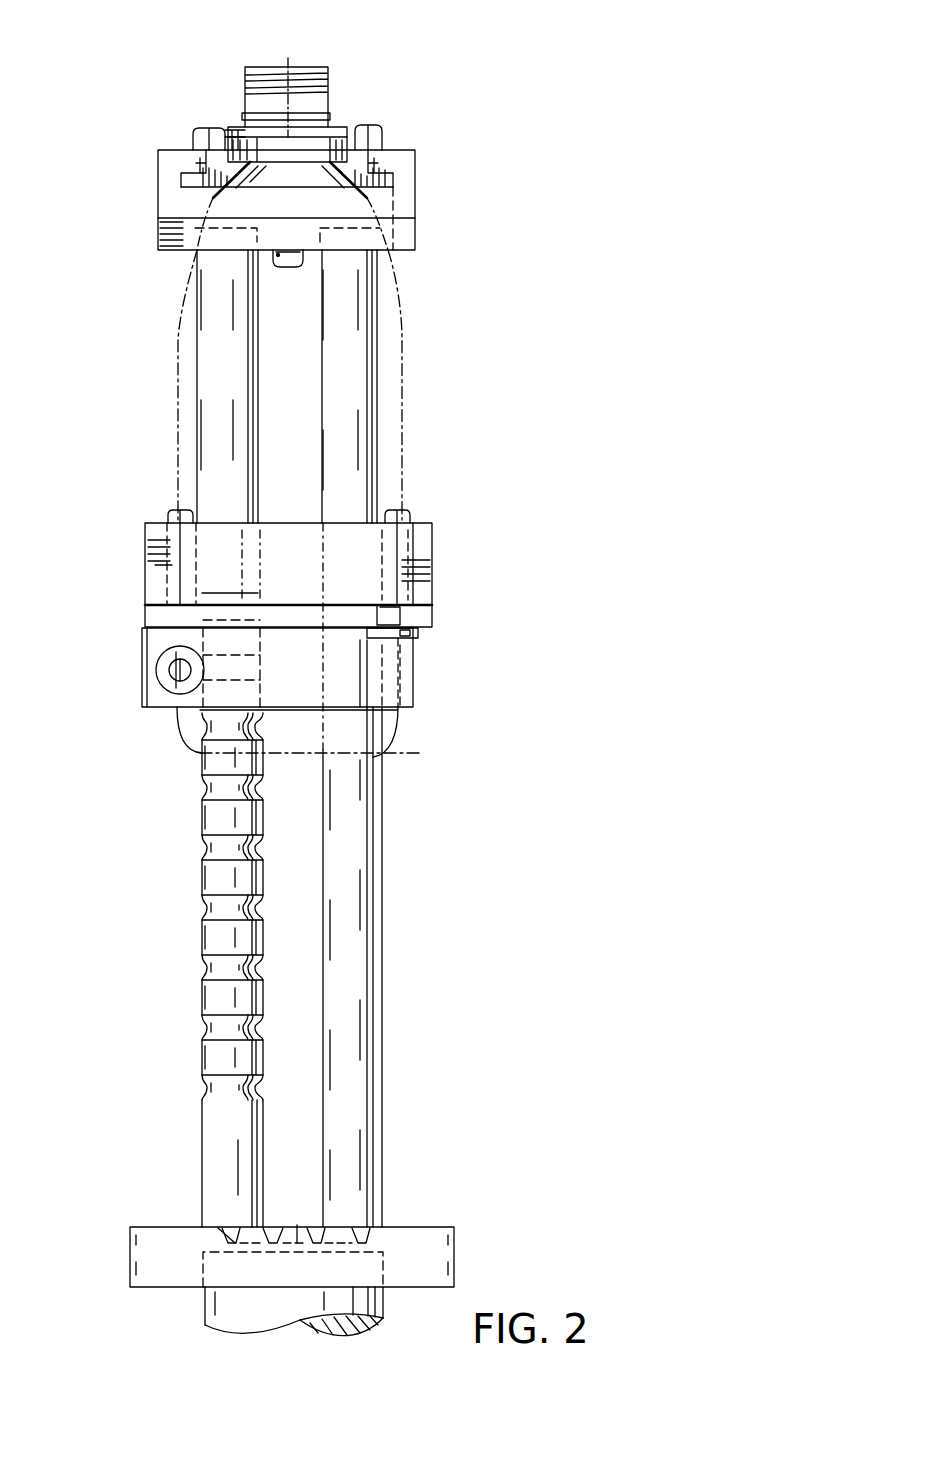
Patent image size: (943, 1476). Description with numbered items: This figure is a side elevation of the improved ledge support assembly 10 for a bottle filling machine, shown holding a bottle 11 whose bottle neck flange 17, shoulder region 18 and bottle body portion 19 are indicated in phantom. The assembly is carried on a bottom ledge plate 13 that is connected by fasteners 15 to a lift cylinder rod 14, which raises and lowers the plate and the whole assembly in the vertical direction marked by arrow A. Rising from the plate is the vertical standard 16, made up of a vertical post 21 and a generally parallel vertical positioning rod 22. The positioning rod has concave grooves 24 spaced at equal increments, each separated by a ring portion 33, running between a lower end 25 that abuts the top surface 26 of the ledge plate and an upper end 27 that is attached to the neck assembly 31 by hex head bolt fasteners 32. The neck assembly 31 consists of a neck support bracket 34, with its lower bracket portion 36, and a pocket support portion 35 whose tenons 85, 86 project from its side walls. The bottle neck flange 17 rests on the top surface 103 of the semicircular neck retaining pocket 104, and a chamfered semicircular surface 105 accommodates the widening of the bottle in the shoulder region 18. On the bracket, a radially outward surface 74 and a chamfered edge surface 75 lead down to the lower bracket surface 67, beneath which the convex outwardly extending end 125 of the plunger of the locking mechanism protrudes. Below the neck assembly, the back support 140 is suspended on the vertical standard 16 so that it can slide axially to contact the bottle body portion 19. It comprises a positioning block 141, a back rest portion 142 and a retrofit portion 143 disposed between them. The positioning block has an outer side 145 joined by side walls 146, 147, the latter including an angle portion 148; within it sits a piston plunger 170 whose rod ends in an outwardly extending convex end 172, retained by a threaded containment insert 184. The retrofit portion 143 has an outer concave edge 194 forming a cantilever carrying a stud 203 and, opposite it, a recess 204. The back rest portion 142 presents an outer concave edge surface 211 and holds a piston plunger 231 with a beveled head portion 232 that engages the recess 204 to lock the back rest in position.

The ledge support assembly 10 is at (578, 206).
The bottle 11 is at (410, 327).
The bottom ledge plate 13 is at (440, 1245).
The lift cylinder rod 14 is at (205, 1305).
The fasteners 15 is at (268, 1225).
The vertical standard 16 is at (418, 944).
The bottle neck flange 17 is at (290, 123).
The shoulder region 18 is at (405, 203).
The bottle body portion 19 is at (405, 410).
The vertical post 21 is at (372, 883).
The vertical positioning rod 22 is at (203, 880).
The concave grooves 24 is at (203, 790).
The lower end 25 is at (218, 1228).
The top surface 26 is at (297, 1225).
The upper end 27 is at (203, 253).
The neck assembly 31 is at (462, 167).
The hex head bolt fasteners 32 is at (196, 130).
The ring portion 33 is at (200, 995).
The neck support bracket 34 is at (150, 162).
The pocket support portion 35 is at (232, 128).
The lower bracket portion 36 is at (158, 210).
The lower bracket surface 67 is at (403, 252).
The radially outward surface 74 is at (407, 210).
The chamfered edge surface 75 is at (407, 236).
The tenon 85 is at (173, 184).
The tenon 86 is at (397, 177).
The top surface 103 is at (333, 138).
The neck retaining pocket 104 is at (350, 147).
The chamfered semicircular surface 105 is at (340, 178).
The outwardly extending end 125 is at (285, 270).
The back support 140 is at (455, 552).
The positioning block 141 is at (415, 707).
The back rest portion 142 is at (143, 556).
The retrofit portion 143 is at (145, 615).
The outer side 145 is at (340, 697).
The side wall 146 is at (142, 647).
The side wall 147 is at (415, 660).
The angle portion 148 is at (393, 688).
The piston plunger 170 is at (163, 669).
The outwardly extending convex end 172 is at (163, 673).
The threaded containment insert 184 is at (168, 692).
The outer concave edge 194 is at (298, 620).
The stud 203 is at (168, 512).
The recess 204 is at (403, 612).
The outer concave edge surface 211 is at (285, 535).
The piston plunger 231 is at (407, 505).
The beveled head portion 232 is at (417, 633).